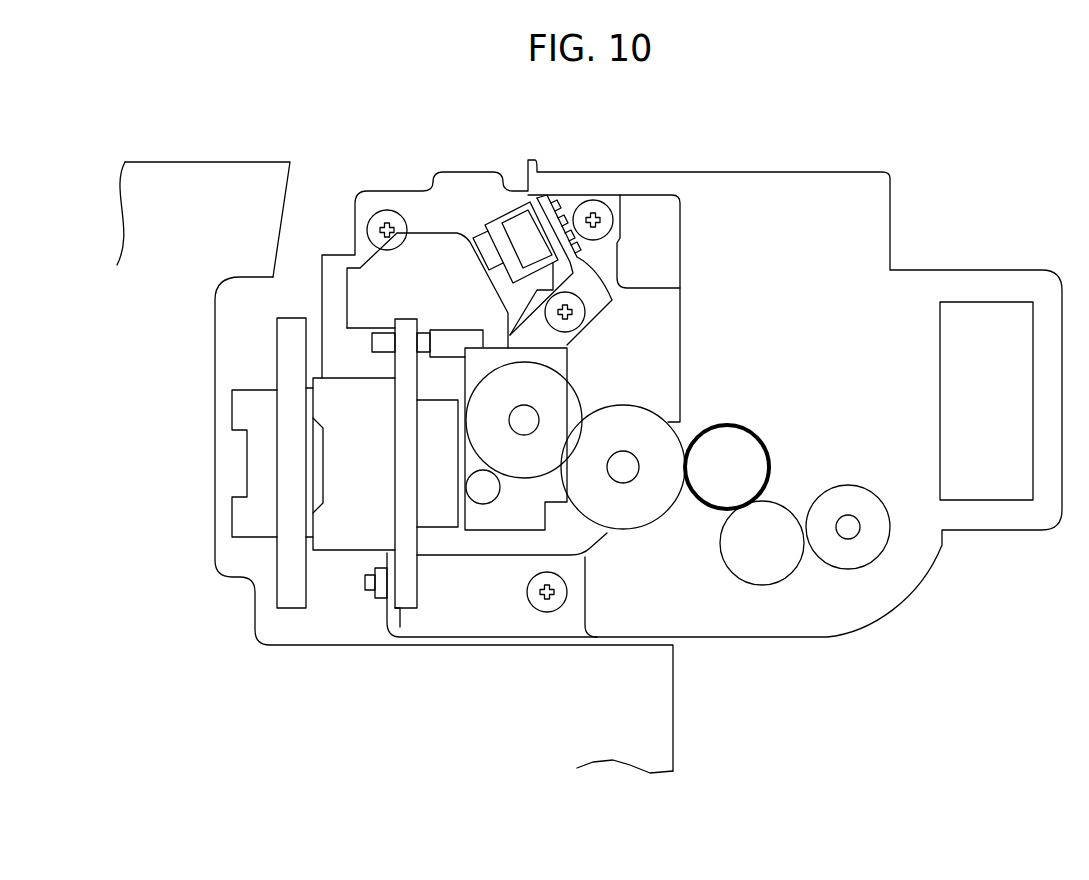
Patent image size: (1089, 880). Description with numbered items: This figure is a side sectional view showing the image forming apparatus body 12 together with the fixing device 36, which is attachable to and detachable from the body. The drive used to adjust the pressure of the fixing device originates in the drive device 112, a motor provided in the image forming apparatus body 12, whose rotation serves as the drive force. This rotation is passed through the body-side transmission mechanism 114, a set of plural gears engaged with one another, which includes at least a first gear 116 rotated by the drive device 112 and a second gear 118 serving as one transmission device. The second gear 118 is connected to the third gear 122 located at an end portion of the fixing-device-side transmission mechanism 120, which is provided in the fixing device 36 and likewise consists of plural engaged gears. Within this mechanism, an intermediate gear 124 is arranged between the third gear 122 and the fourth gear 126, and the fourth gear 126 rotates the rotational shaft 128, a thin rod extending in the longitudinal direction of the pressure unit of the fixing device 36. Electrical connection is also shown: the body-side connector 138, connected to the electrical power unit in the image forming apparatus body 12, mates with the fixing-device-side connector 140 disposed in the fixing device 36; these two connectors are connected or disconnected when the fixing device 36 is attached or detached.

The image forming apparatus body 12 is at (292, 186).
The fixing device 36 is at (892, 231).
The drive device 112 is at (482, 493).
The body-side transmission mechanism 114 is at (515, 491).
The first gear 116 is at (553, 393).
The second gear 118 is at (647, 512).
The fixing-device-side transmission mechanism 120 is at (797, 452).
The third gear 122 is at (735, 438).
The intermediate gear 124 is at (767, 572).
The fourth gear 126 is at (852, 563).
The rotational shaft 128 is at (848, 527).
The body-side connector 138 is at (257, 473).
The fixing-device-side connector 140 is at (343, 533).